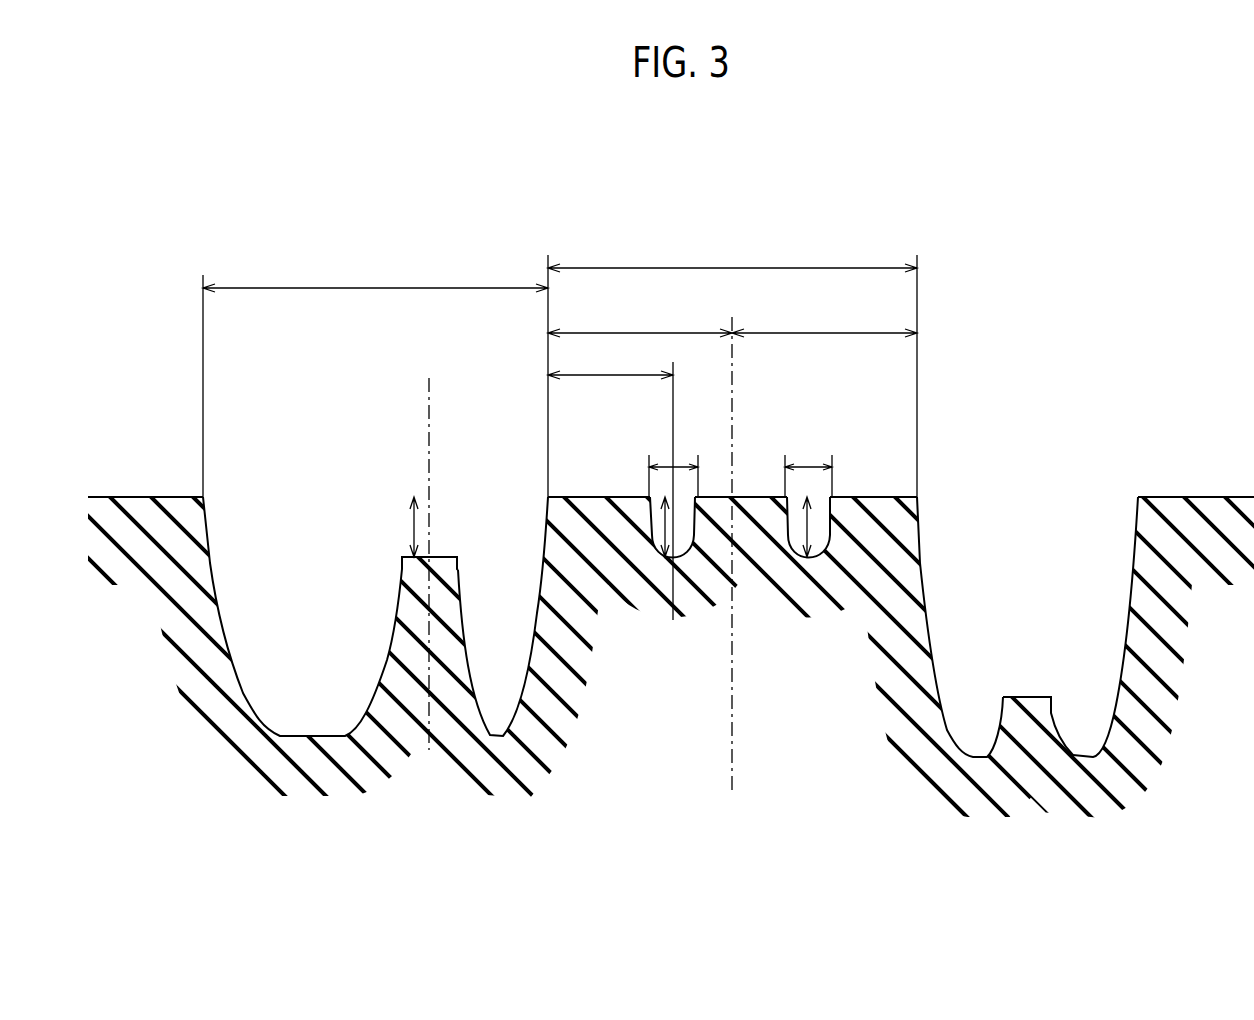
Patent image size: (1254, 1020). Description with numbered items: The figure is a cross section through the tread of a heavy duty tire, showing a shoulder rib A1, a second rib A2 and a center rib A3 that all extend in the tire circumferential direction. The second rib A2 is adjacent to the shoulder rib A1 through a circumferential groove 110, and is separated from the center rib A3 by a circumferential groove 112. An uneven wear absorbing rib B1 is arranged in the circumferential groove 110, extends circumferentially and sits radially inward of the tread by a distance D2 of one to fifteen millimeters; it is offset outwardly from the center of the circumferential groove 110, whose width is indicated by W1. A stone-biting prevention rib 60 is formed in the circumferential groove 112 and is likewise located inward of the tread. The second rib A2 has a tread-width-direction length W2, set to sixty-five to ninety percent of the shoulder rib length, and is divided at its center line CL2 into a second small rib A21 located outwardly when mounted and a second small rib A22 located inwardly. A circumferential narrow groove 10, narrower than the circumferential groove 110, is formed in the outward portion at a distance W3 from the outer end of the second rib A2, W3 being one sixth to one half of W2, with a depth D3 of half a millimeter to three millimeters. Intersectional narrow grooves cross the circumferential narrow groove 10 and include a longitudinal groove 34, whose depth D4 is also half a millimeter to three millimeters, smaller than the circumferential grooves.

The circumferential groove 110 is at (349, 522).
The circumferential groove 112 is at (1049, 522).
The circumferential narrow groove 10 is at (689, 506).
The longitudinal groove 34 is at (829, 506).
The stone-biting prevention rib 60 is at (1033, 697).
The uneven wear absorbing rib B1 is at (414, 697).
The shoulder rib A1 is at (124, 668).
The second rib A2 is at (663, 668).
The center rib A3 is at (1196, 667).
The second small rib A21 is at (640, 318).
The second small rib A22 is at (824, 318).
The width of first main groove W1 is at (375, 374).
The length of the second rib in the tread width direction W2 is at (732, 364).
The distance from the outward end of the second rib to the center of the circumferen W3 is at (610, 479).
The distance between the uneven wear absorbing rib and the tread D2 is at (397, 527).
The depth of the circumferential narrow groove D3 is at (693, 500).
The depth of the intersectional narrow groove D4 is at (830, 500).
The center of the second rib in the tread width direction CL2 is at (732, 572).